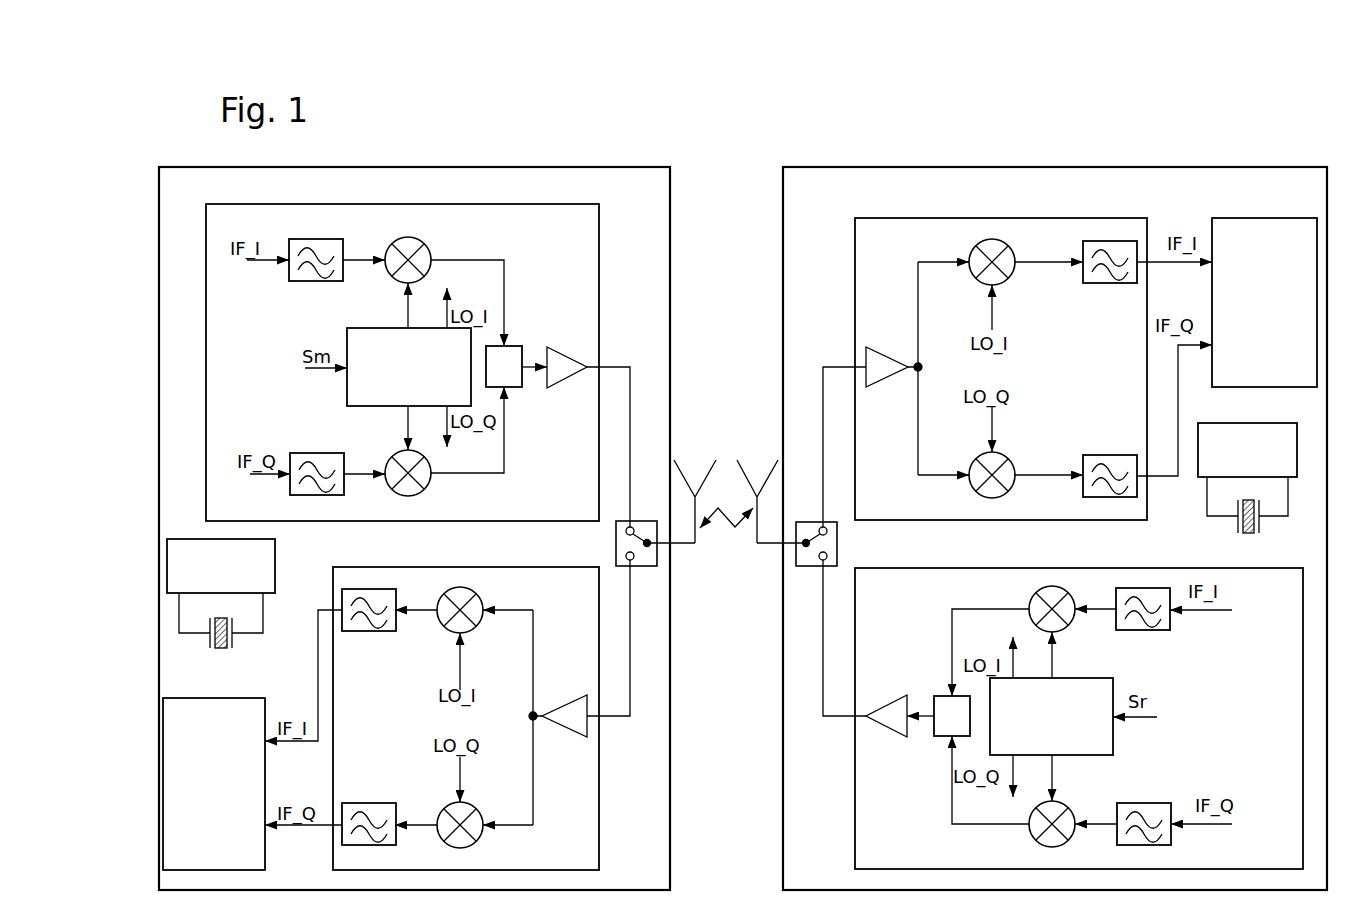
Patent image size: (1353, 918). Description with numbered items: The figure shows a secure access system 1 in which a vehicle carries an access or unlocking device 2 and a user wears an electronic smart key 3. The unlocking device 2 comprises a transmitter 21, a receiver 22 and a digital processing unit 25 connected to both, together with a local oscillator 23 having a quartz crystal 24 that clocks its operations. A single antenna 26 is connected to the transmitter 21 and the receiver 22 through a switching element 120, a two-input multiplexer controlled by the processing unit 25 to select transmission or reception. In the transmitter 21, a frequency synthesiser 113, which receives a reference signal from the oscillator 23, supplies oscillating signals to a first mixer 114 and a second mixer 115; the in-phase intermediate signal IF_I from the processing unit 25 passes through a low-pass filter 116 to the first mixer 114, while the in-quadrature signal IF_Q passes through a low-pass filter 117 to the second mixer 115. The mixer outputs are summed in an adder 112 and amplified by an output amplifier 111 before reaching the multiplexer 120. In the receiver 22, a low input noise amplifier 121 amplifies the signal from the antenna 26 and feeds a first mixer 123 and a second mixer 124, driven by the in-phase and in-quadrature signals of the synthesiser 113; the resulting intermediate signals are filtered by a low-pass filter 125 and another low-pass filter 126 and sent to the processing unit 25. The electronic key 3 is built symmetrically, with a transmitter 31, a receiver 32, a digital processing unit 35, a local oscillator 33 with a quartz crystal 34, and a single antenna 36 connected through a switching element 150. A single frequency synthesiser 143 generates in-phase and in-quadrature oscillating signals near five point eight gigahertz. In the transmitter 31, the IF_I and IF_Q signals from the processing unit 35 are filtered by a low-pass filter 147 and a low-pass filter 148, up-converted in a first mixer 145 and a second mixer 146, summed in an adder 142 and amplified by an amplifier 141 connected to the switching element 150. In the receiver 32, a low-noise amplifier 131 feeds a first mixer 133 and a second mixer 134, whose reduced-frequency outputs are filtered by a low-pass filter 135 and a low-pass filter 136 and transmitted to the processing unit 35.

The secure access system 1 is at (738, 149).
The access or unlocking device 2 is at (565, 185).
The electronic smart key 3 is at (1275, 170).
The transmitter 21 is at (552, 497).
The receiver 22 is at (567, 872).
The local oscillator 23 is at (275, 562).
The quartz crystal 24 is at (232, 640).
The digital processing unit 25 is at (200, 712).
The antenna 26 is at (697, 530).
The transmitter 31 is at (935, 870).
The receiver 32 is at (1001, 223).
The local oscillator 33 is at (1226, 428).
The quartz crystal 34 is at (1237, 522).
The digital processing unit 35 is at (1212, 290).
The antenna 36 is at (752, 530).
The output amplifier 111 is at (563, 362).
The adder 112 is at (516, 387).
The frequency synthesiser 113 is at (385, 336).
The first mixer 114 is at (409, 243).
The second mixer 115 is at (408, 496).
The low-pass filter 116 is at (315, 282).
The low-pass filter 117 is at (315, 455).
The switching element 120 is at (650, 567).
The low input noise amplifier 121 is at (570, 720).
The first mixer 123 is at (460, 590).
The second mixer 124 is at (460, 849).
The low-pass filter 125 is at (362, 589).
The low-pass filter 126 is at (362, 848).
The low-noise amplifier 131 is at (888, 372).
The first mixer 133 is at (1010, 270).
The second mixer 134 is at (975, 485).
The low-pass filter 135 is at (1117, 283).
The low-pass filter 136 is at (1118, 455).
The amplifier 141 is at (897, 705).
The adder 142 is at (940, 736).
The frequency synthesiser 143 is at (1090, 685).
The first mixer 145 is at (1048, 583).
The second mixer 146 is at (1052, 848).
The low-pass filter 147 is at (1140, 588).
The low-pass filter 148 is at (1140, 845).
The switching element 150 is at (798, 567).